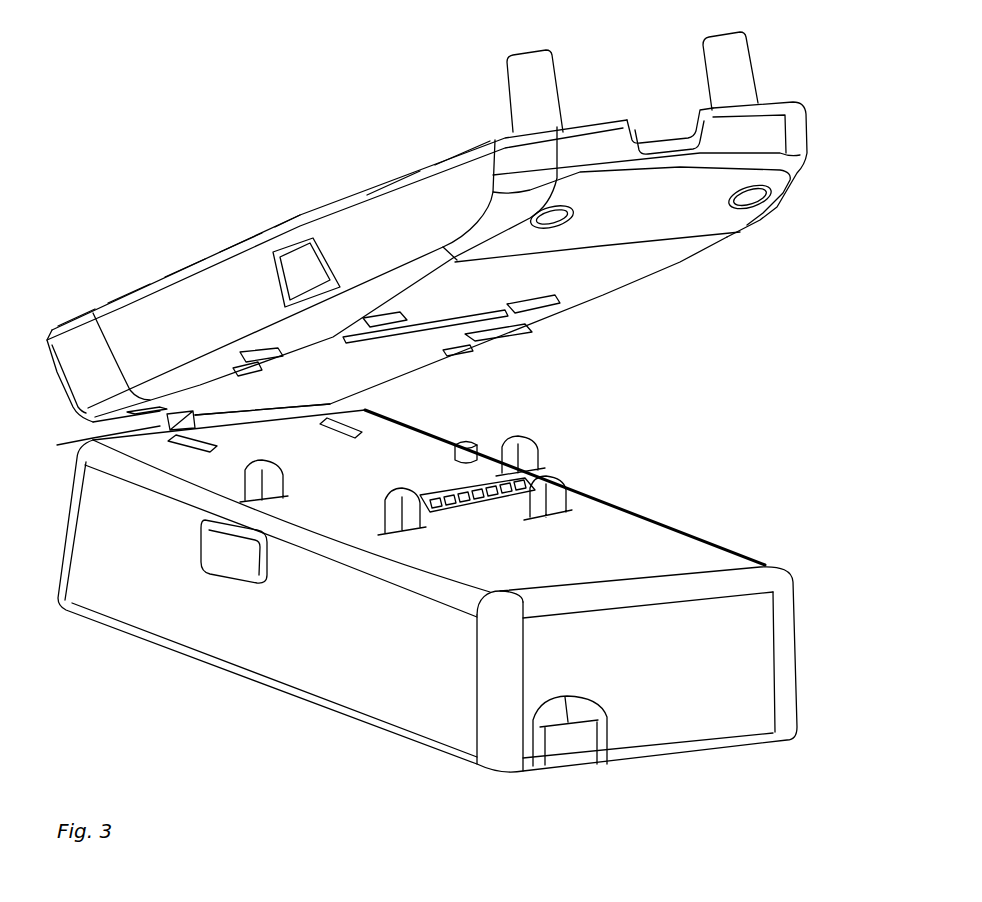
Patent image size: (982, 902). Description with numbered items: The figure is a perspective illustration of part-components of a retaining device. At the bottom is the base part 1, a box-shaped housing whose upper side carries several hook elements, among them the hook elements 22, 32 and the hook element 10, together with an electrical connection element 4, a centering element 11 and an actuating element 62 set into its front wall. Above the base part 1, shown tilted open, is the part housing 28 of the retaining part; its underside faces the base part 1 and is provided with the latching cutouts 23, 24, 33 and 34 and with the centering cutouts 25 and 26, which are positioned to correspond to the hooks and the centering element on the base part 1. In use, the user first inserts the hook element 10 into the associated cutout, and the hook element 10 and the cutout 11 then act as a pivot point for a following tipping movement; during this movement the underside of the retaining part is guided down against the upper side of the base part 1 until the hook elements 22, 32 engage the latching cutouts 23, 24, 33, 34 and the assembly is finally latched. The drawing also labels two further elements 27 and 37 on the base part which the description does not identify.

The base part 1 is at (268, 700).
The electrical connection element 4 is at (483, 493).
The hook element 10 is at (90, 439).
The centering element 11 is at (463, 443).
The hook element 22 is at (382, 513).
The latching cutout 23 is at (377, 313).
The latching cutout 24 is at (557, 300).
The centering cutout 25 is at (230, 370).
The centering cutout 26 is at (460, 353).
The latching hook on base 27 is at (567, 477).
The part housing 28 is at (802, 92).
The hook element 32 is at (247, 483).
The latching cutout 33 is at (258, 351).
The latching cutout 34 is at (525, 328).
The latching hook on base 37 is at (537, 440).
The actuating element 62 is at (213, 560).